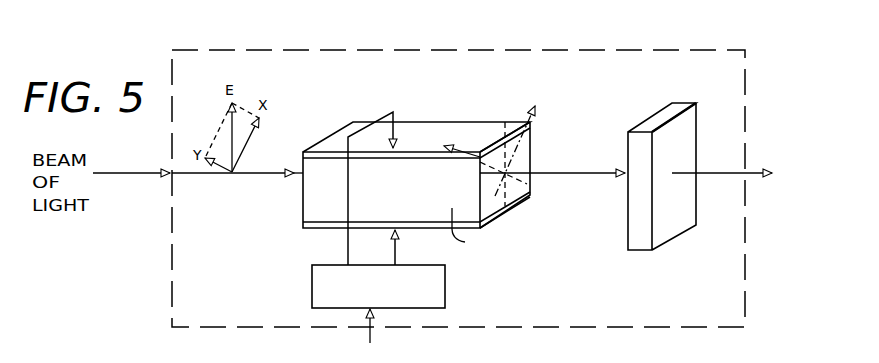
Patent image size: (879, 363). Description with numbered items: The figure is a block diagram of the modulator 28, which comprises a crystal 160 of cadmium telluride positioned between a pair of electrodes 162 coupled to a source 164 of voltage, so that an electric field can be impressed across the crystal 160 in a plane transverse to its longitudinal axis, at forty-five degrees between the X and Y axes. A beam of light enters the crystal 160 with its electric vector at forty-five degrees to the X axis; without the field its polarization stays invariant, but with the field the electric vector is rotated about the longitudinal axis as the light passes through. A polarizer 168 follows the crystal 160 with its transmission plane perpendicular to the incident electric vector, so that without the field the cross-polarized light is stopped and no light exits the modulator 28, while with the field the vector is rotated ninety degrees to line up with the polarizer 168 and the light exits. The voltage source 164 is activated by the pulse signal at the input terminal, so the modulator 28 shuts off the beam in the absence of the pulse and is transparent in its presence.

The modulator 28 is at (745, 98).
The crystal 160 is at (304, 197).
The electrodes 162 is at (442, 120).
The source of voltage 164 is at (442, 300).
The polarizer 168 is at (668, 270).